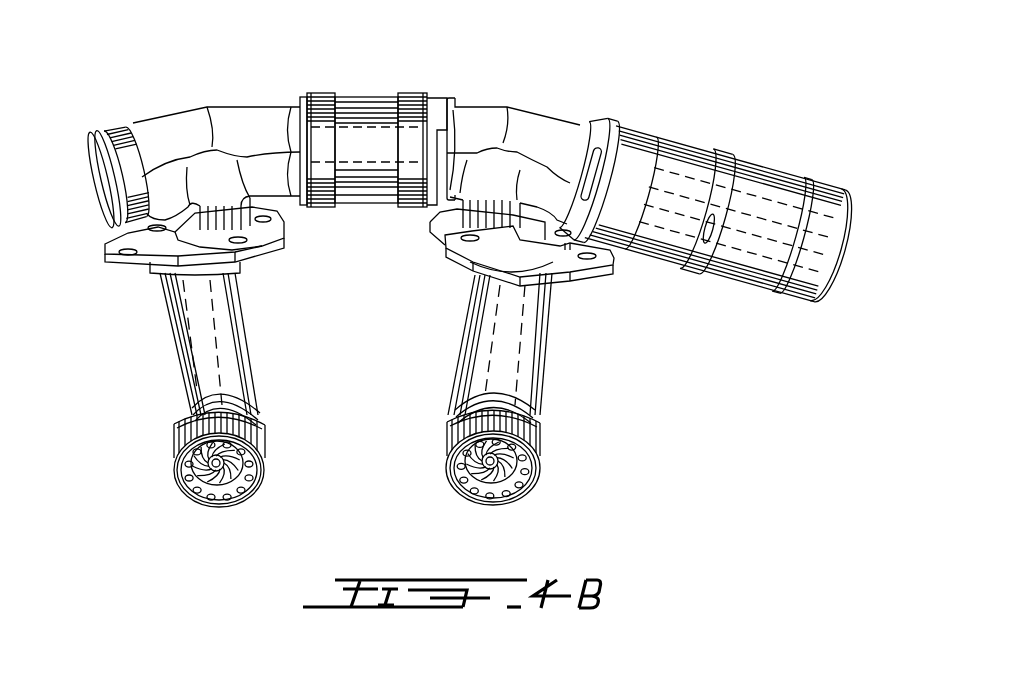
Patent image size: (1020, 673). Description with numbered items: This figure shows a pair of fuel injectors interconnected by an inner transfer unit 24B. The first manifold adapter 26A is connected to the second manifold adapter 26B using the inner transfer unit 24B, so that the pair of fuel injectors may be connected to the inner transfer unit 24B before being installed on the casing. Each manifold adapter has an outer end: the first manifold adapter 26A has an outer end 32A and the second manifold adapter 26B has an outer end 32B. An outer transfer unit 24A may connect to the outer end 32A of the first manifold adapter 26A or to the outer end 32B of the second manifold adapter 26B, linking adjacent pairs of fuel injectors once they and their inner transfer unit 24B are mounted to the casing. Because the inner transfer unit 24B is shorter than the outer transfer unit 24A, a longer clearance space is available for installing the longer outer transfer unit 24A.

The outer transfer unit 24A is at (760, 171).
The inner transfer unit 24B is at (358, 95).
The first manifold adapter 26A is at (173, 115).
The second manifold adapter 26B is at (533, 114).
The outer end of the first manifold adapter 32A is at (114, 132).
The outer end of the second manifold adapter 32B is at (612, 203).